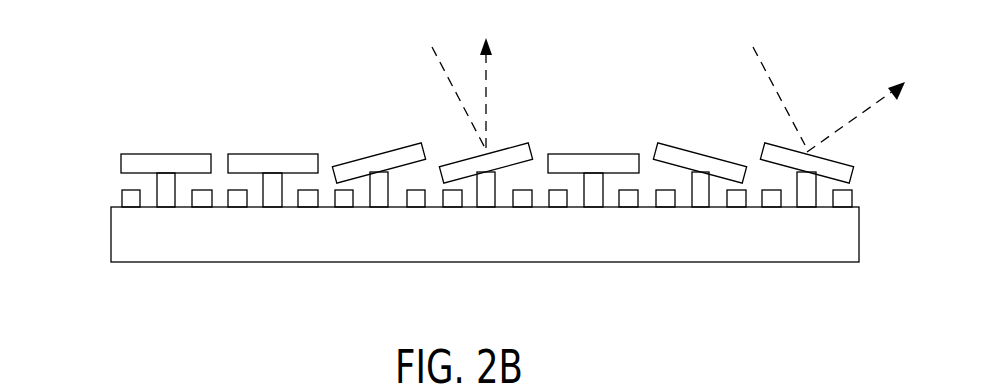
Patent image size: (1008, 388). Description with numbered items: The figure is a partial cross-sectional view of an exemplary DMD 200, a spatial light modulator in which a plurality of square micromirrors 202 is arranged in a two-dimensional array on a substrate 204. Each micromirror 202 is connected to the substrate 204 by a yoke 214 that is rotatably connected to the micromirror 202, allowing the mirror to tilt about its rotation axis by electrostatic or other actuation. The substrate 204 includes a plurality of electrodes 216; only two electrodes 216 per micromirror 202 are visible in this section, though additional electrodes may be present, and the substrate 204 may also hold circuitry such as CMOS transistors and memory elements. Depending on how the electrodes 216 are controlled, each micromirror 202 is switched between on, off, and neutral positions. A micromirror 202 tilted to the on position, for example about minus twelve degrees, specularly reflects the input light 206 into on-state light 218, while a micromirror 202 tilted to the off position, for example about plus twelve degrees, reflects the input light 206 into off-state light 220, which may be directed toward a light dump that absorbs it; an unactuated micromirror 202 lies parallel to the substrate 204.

The DMD 200 is at (82, 63).
The micromirror 202 is at (150, 152).
The substrate 204 is at (328, 262).
The input light 206 is at (450, 82).
The yoke 214 is at (157, 180).
The electrode 216 is at (213, 190).
The on-state light 218 is at (490, 77).
The off-state light 220 is at (857, 118).